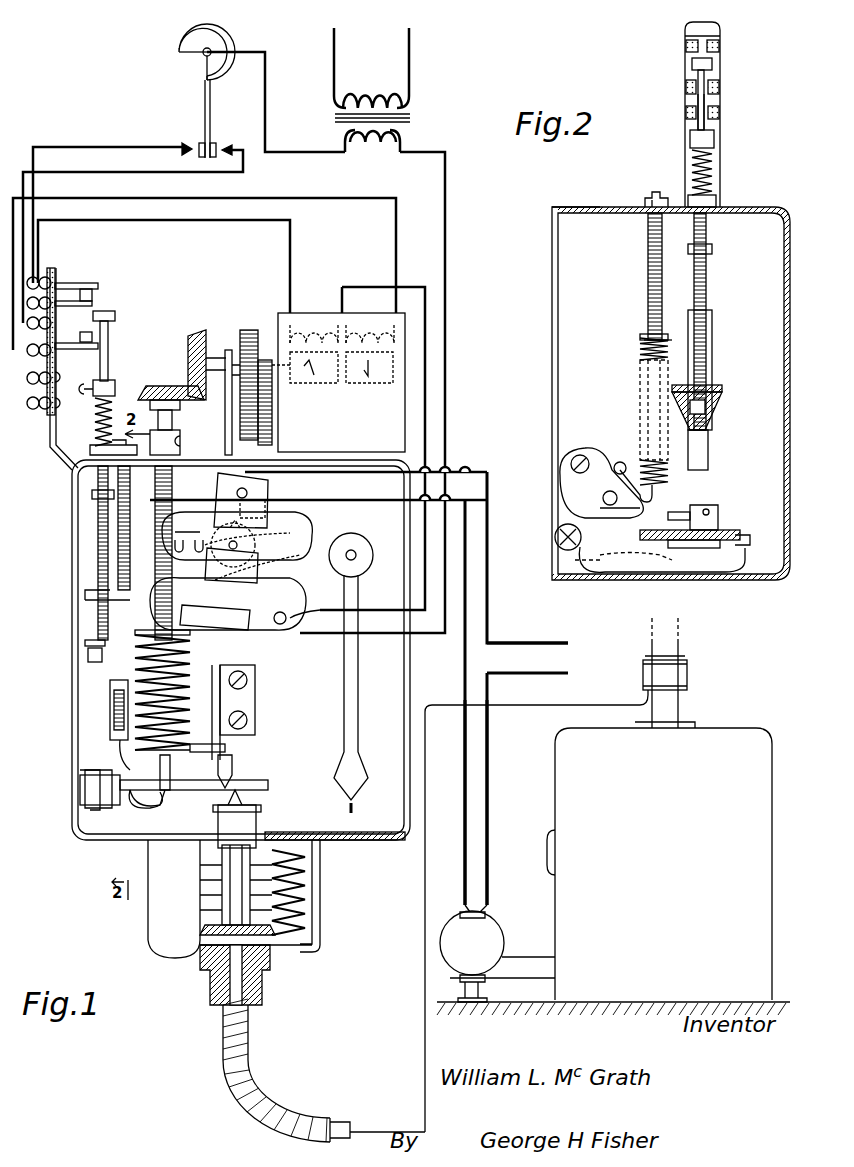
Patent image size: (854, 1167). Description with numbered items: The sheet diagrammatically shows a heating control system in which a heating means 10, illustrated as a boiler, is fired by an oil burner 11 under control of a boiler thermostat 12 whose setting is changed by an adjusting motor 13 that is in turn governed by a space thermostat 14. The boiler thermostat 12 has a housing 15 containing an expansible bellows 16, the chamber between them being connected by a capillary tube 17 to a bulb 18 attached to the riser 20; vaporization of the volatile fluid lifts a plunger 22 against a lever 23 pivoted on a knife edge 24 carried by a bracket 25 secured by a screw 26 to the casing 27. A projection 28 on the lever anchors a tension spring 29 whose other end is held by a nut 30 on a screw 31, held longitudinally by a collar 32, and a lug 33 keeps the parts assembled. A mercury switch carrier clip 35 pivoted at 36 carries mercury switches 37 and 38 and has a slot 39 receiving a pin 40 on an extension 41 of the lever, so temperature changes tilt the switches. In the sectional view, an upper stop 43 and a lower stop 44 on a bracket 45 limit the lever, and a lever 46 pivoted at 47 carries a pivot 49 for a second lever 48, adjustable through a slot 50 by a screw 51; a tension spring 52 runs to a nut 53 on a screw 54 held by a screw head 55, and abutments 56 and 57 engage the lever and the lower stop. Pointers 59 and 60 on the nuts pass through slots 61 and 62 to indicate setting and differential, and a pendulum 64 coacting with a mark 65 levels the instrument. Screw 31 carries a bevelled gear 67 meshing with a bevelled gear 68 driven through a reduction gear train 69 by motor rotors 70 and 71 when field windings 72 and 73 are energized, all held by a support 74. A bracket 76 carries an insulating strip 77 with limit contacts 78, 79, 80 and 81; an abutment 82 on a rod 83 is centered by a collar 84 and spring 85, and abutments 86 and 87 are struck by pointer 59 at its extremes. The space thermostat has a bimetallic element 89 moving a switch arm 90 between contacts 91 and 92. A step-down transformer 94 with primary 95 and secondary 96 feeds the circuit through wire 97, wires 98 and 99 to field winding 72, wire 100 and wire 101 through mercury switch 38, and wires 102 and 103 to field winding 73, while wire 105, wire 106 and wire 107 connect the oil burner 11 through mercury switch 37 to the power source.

In FIG. 1, the heating means 10 is at (659, 864).
In FIG. 1, the oil burner 11 is at (494, 935).
In FIG. 1, the boiler thermostat 12 is at (72, 838).
In FIG. 2, the boiler thermostat 12 is at (560, 204).
In FIG. 1, the adjusting motor 13 is at (275, 308).
In FIG. 1, the space thermostat 14 is at (163, 70).
In FIG. 1, the housing 15 is at (320, 908).
In FIG. 1, the expansible bellows 16 is at (308, 882).
In FIG. 1, the capillary tube 17 is at (240, 1056).
In FIG. 1, the bulb 18 is at (642, 676).
In FIG. 1, the riser 20 is at (676, 700).
In FIG. 1, the plunger 22 is at (258, 814).
In FIG. 1, the lever 23 is at (266, 782).
In FIG. 2, the lever 23 is at (722, 540).
In FIG. 1, the knife edge 24 is at (232, 772).
In FIG. 1, the bracket 25 is at (256, 696).
In FIG. 1, the screw 26 is at (248, 676).
In FIG. 1, the casing 27 is at (458, 650).
In FIG. 2, the casing 27 is at (552, 352).
In FIG. 1, the projection 28 is at (158, 806).
In FIG. 1, the tension spring 29 is at (190, 672).
In FIG. 1, the nut 30 is at (192, 636).
In FIG. 1, the screw 31 is at (160, 560).
In FIG. 1, the collar 32 is at (180, 440).
In FIG. 1, the lug 33 is at (226, 747).
In FIG. 1, the mercury switch carrier clip 35 is at (216, 488).
In FIG. 1, the pivot 36 is at (248, 492).
In FIG. 1, the mercury switch 37 is at (300, 564).
In FIG. 1, the mercury switch 38 is at (286, 600).
In FIG. 1, the slot 39 is at (260, 522).
In FIG. 1, the pin 40 is at (290, 534).
In FIG. 1, the extension 41 is at (256, 584).
In FIG. 2, the upper stop 43 is at (680, 512).
In FIG. 2, the lower stop 44 is at (725, 528).
In FIG. 1, the bracket 45 is at (82, 780).
In FIG. 2, the bracket 45 is at (710, 504).
In FIG. 1, the lever 46 is at (108, 770).
In FIG. 2, the lever 46 is at (745, 562).
In FIG. 1, the pivot 47 is at (118, 750).
In FIG. 2, the pivot 47 is at (555, 540).
In FIG. 2, the second lever 48 is at (580, 500).
In FIG. 2, the pivot 49 is at (641, 476).
In FIG. 2, the slot 50 is at (570, 468).
In FIG. 1, the screw 51 is at (114, 713).
In FIG. 2, the screw 51 is at (582, 455).
In FIG. 1, the tension spring 52 is at (110, 692).
In FIG. 2, the tension spring 52 is at (640, 362).
In FIG. 2, the nut 53 is at (640, 348).
In FIG. 1, the screw 54 is at (118, 569).
In FIG. 2, the screw 54 is at (648, 266).
In FIG. 1, the screw head 55 is at (92, 454).
In FIG. 2, the screw head 55 is at (645, 200).
In FIG. 2, the abutment 56 is at (753, 538).
In FIG. 2, the abutment 57 is at (670, 556).
In FIG. 1, the pointer 59 is at (85, 642).
In FIG. 2, the pointer 59 is at (722, 386).
In FIG. 1, the pointer 60 is at (85, 597).
In FIG. 2, the pointer 60 is at (640, 336).
In FIG. 2, the slot 61 is at (712, 350).
In FIG. 2, the slot 62 is at (646, 320).
In FIG. 1, the pendulum 64 is at (356, 690).
In FIG. 1, the mark 65 is at (356, 806).
In FIG. 1, the bevelled gear 67 is at (170, 384).
In FIG. 1, the bevelled gear 68 is at (192, 338).
In FIG. 1, the reduction gear train 69 is at (240, 335).
In FIG. 1, the motor rotor 70 is at (306, 385).
In FIG. 1, the motor rotor 71 is at (358, 385).
In FIG. 1, the field winding 72 is at (314, 322).
In FIG. 1, the field winding 73 is at (366, 322).
In FIG. 1, the support 74 is at (225, 414).
In FIG. 1, the bracket 76 is at (50, 441).
In FIG. 2, the bracket 76 is at (685, 152).
In FIG. 1, the strip of insulating material 77 is at (44, 368).
In FIG. 2, the strip of insulating material 77 is at (686, 88).
In FIG. 1, the contact 78 is at (68, 284).
In FIG. 2, the contact 78 is at (720, 38).
In FIG. 1, the contact 79 is at (76, 306).
In FIG. 2, the contact 79 is at (720, 56).
In FIG. 1, the contact 80 is at (80, 336).
In FIG. 2, the contact 80 is at (712, 72).
In FIG. 1, the contact 81 is at (90, 349).
In FIG. 2, the contact 81 is at (720, 100).
In FIG. 1, the abutment 82 is at (112, 311).
In FIG. 2, the abutment 82 is at (692, 64).
In FIG. 1, the rod 83 is at (108, 340).
In FIG. 2, the rod 83 is at (720, 122).
In FIG. 1, the collar 84 is at (108, 384).
In FIG. 2, the collar 84 is at (714, 139).
In FIG. 1, the spring 85 is at (96, 424).
In FIG. 2, the spring 85 is at (714, 165).
In FIG. 1, the abutment 86 is at (92, 493).
In FIG. 2, the abutment 86 is at (712, 246).
In FIG. 1, the abutment 87 is at (88, 657).
In FIG. 2, the abutment 87 is at (706, 408).
In FIG. 1, the bimetallic element 89 is at (180, 45).
In FIG. 1, the switch arm 90 is at (205, 128).
In FIG. 1, the contact 91 is at (190, 148).
In FIG. 1, the contact 92 is at (228, 148).
In FIG. 1, the step-down transformer 94 is at (418, 108).
In FIG. 1, the primary 95 is at (372, 94).
In FIG. 1, the secondary 96 is at (372, 148).
In FIG. 1, the wire 97 is at (266, 124).
In FIG. 1, the wire 98 is at (58, 146).
In FIG. 1, the wire 99 is at (140, 220).
In FIG. 1, the wire 100 is at (368, 286).
In FIG. 1, the wire 101 is at (450, 170).
In FIG. 1, the wire 102 is at (115, 170).
In FIG. 1, the wire 103 is at (132, 198).
In FIG. 1, the wire 105 is at (538, 643).
In FIG. 1, the wire 106 is at (462, 680).
In FIG. 1, the wire 107 is at (520, 675).